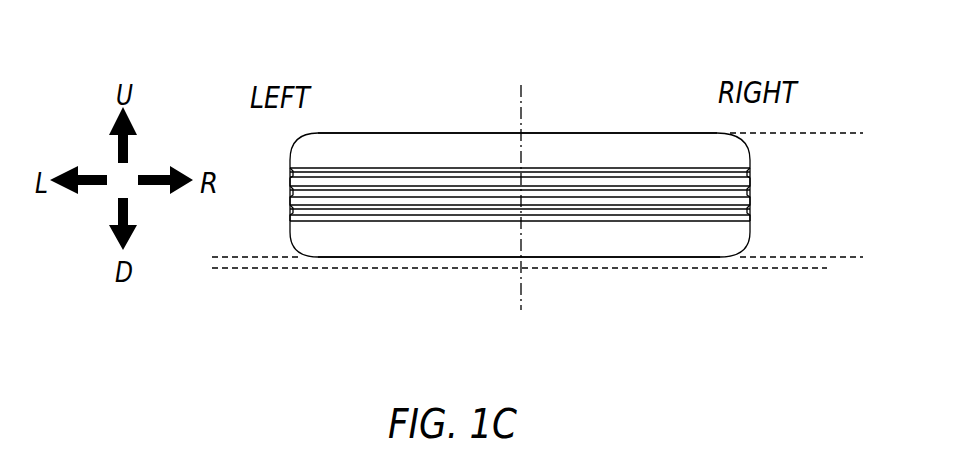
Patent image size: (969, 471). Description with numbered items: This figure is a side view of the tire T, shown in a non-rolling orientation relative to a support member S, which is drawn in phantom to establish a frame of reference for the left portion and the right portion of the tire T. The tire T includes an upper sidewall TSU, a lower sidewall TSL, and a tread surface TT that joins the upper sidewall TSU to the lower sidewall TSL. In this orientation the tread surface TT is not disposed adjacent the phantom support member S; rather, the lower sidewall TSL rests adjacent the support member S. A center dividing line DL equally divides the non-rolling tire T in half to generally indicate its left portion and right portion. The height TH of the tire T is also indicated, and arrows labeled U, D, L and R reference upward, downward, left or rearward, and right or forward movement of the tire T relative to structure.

The tire T is at (371, 106).
The upper sidewall TSU is at (492, 133).
The lower sidewall TSL is at (455, 257).
The tread surface TT is at (750, 172).
The height of the tire TH is at (842, 140).
The support member S is at (247, 272).
The center dividing line DL is at (522, 112).